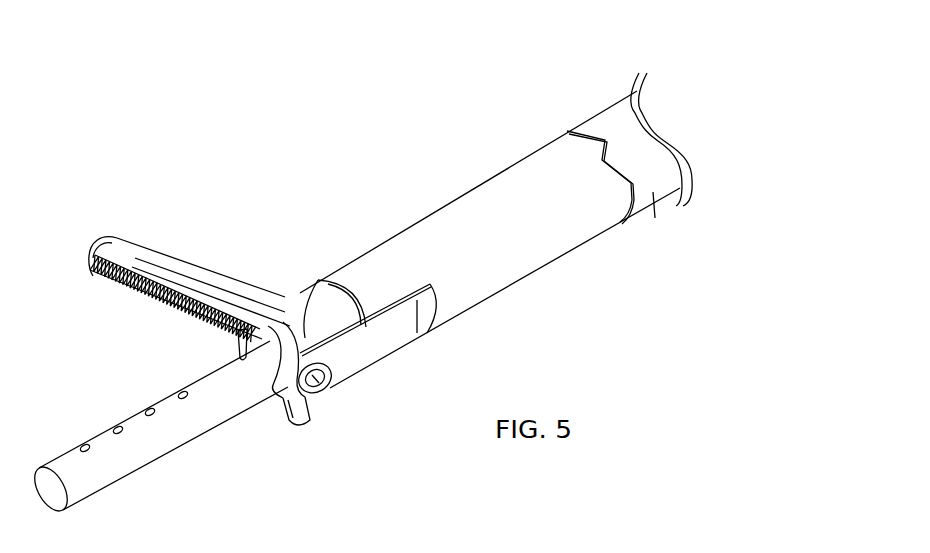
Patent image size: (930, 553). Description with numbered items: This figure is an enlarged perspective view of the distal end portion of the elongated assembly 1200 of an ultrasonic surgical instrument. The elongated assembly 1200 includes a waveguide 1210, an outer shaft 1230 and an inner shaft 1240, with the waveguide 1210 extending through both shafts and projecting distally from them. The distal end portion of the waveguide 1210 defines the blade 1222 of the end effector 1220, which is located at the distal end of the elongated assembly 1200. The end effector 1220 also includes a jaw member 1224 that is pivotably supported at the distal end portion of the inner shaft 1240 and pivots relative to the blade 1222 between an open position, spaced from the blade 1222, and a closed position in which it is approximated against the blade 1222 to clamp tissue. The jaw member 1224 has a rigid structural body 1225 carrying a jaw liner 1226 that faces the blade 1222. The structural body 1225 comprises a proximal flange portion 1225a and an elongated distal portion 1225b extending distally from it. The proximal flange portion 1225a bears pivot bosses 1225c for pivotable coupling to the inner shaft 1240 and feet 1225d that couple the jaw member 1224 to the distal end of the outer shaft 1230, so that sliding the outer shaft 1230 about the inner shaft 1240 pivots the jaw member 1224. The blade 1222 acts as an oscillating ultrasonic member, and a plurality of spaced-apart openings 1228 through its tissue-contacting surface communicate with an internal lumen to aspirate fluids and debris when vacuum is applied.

The elongated assembly 1200 is at (582, 78).
The waveguide 1210 is at (248, 395).
The end effector 1220 is at (131, 182).
The blade 1222 is at (172, 484).
The jaw member 1224 is at (206, 243).
The structural body 1225 is at (121, 252).
The proximal flange portion 1225a is at (302, 343).
The elongated distal portion 1225b is at (165, 266).
The pivot bosses 1225c is at (332, 386).
The feet 1225d is at (314, 425).
The jaw liner 1226 is at (104, 281).
The openings 1228 is at (185, 395).
The outer shaft 1230 is at (655, 218).
The inner shaft 1240 is at (510, 267).